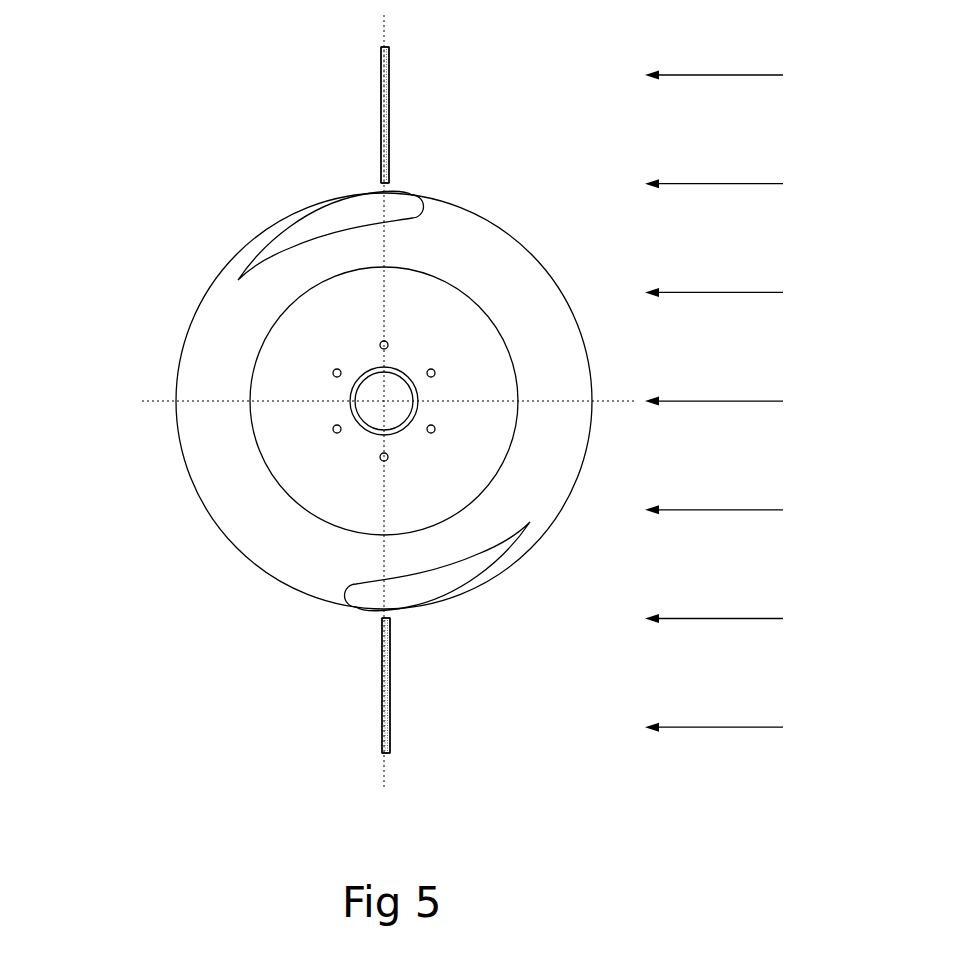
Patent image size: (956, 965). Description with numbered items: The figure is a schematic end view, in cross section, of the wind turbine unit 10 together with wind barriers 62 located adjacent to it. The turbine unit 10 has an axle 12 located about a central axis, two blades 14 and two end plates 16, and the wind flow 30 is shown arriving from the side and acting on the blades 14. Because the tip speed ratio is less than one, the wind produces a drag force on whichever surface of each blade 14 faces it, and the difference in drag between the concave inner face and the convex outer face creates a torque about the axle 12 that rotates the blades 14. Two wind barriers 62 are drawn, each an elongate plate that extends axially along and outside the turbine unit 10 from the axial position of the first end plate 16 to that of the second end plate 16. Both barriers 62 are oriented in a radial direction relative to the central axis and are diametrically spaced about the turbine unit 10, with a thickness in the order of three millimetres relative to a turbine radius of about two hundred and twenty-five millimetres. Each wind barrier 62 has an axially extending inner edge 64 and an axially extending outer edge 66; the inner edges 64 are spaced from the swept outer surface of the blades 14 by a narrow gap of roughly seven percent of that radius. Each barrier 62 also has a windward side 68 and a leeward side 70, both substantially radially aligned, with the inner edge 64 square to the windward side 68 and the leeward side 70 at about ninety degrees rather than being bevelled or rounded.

The wind turbine unit 10 is at (140, 215).
The axle 12 is at (404, 432).
The blade 14 is at (262, 250).
The end plate 16 is at (215, 482).
The wind flow 30 is at (739, 401).
The wind barrier 62 is at (389, 102).
The inner edge 64 is at (381, 183).
The outer edge 66 is at (381, 48).
The windward side 68 is at (389, 126).
The leeward side 70 is at (381, 70).